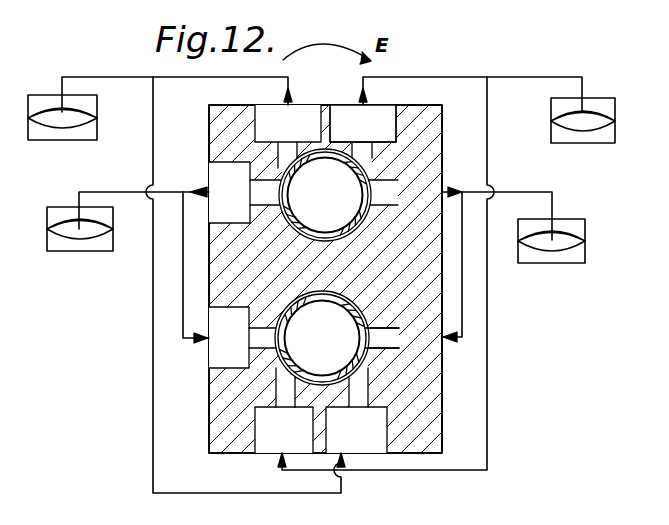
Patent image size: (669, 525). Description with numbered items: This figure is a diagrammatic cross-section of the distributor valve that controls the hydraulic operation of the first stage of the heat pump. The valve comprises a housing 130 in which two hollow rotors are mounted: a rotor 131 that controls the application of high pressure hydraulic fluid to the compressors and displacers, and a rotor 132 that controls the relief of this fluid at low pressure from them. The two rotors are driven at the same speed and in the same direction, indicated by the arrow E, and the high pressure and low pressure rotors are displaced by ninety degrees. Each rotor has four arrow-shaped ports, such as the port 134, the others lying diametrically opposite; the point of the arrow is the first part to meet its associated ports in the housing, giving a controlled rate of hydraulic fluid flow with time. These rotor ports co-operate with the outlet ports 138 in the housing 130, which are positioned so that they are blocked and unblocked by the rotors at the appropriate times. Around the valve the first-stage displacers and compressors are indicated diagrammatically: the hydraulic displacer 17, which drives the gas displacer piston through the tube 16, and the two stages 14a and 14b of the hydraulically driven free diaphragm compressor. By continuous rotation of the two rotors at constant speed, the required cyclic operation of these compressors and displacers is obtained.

The housing 130 is at (215, 124).
The rotor 131 is at (363, 145).
The port 134 is at (278, 143).
The outlet ports 138 is at (385, 190).
The rotor 132 is at (367, 355).
The tube 16 is at (85, 107).
The hydraulic displacer 17 is at (558, 108).
The first stage of compressor 14a is at (57, 213).
The second stage of compressor 14b is at (562, 225).